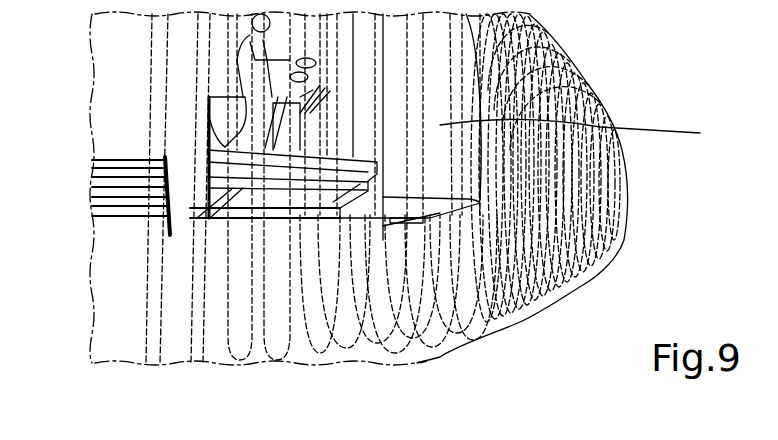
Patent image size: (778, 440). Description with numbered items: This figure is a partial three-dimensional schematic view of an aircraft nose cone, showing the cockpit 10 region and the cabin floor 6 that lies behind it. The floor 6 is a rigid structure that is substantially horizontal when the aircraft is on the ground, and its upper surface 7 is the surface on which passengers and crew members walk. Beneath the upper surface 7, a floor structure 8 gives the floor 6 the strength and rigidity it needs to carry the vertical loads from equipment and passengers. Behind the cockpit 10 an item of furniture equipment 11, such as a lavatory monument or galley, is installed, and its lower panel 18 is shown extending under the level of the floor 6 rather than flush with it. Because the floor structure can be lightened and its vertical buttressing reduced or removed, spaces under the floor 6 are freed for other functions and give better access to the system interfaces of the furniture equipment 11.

The cockpit 10 is at (557, 50).
The item of furniture equipment 11 is at (588, 133).
The upper surface 7 is at (225, 147).
The floor 6 is at (301, 178).
The floor structure 8 is at (245, 190).
The lower panel 18 is at (440, 217).